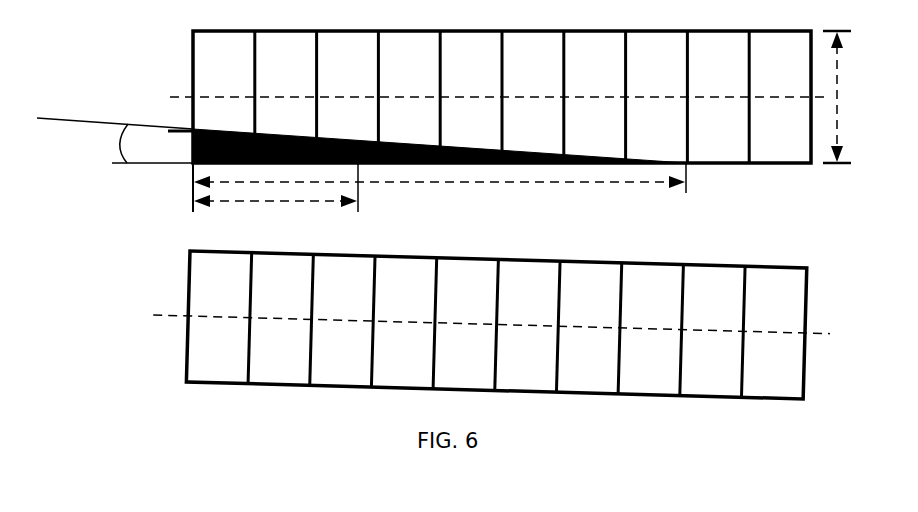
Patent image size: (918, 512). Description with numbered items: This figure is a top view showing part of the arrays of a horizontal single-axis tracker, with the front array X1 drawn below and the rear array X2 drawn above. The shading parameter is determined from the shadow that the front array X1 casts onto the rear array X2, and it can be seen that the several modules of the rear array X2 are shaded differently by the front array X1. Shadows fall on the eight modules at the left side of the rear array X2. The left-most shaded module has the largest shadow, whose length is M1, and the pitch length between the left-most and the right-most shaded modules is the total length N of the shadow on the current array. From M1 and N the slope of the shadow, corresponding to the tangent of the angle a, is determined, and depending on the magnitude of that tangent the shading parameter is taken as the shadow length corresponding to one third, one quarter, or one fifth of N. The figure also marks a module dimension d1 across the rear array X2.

The rear array X2 is at (478, 97).
The front array X1 is at (479, 325).
The shadow length on left-most module M1 is at (418, 146).
The shadow slope angle a is at (115, 140).
The total length of the shadow N is at (439, 189).
The module thickness d1 is at (844, 97).